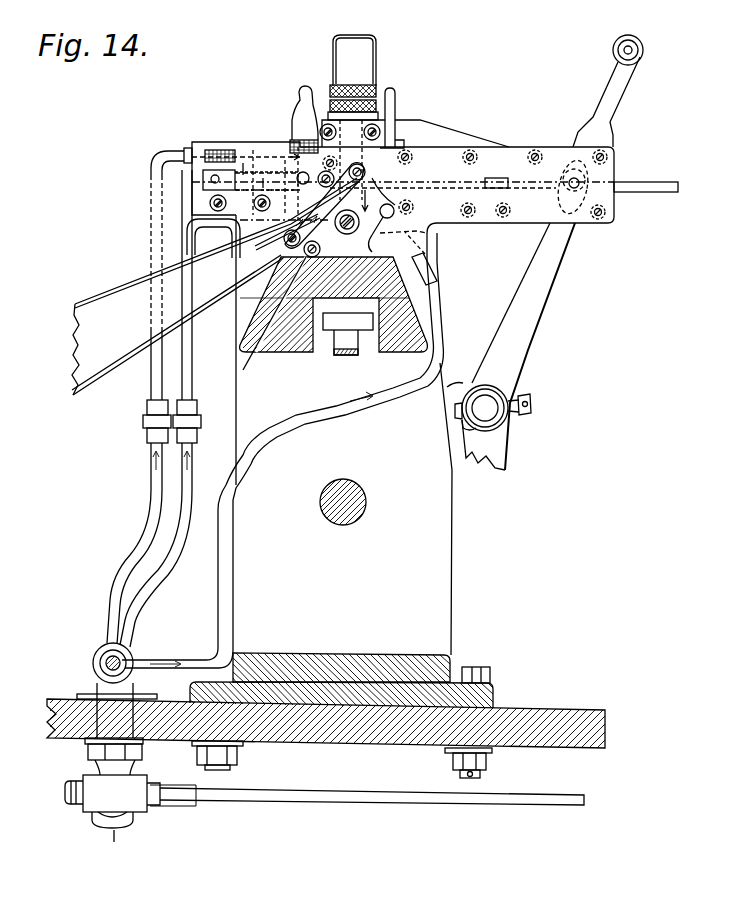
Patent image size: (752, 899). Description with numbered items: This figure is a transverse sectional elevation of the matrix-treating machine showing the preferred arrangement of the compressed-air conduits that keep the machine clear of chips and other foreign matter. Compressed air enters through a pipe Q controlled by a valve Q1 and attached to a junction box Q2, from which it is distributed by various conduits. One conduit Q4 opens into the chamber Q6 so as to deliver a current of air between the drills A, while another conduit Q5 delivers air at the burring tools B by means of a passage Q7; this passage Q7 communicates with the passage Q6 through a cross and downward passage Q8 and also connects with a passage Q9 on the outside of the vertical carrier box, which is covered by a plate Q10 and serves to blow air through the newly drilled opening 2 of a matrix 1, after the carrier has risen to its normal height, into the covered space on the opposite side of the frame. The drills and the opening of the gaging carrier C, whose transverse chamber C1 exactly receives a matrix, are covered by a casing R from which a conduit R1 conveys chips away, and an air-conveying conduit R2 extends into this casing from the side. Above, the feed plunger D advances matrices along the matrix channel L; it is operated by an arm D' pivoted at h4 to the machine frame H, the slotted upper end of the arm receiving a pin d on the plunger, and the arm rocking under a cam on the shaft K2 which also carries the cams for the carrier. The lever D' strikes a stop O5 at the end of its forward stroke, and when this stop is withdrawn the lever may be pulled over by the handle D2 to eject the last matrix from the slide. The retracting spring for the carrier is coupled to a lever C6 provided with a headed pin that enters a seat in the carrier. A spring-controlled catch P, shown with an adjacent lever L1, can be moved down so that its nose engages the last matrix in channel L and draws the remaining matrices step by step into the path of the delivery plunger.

The spring-controlled catch P is at (304, 100).
The cross and downward passage Q8 is at (311, 135).
The handle lever L1 is at (297, 122).
The passage Q7 is at (240, 152).
The matrix 1 is at (245, 165).
The opening 2 is at (264, 178).
The conduit Q5 is at (152, 246).
The burring tools B is at (203, 190).
The conduit R1 is at (92, 296).
The chamber Q6 is at (252, 250).
The conduit Q4 is at (193, 382).
The plate Q10 is at (274, 327).
The gaging carrier C is at (397, 107).
The stop O5 is at (358, 131).
The passage Q9 is at (372, 178).
The matrix channel L is at (473, 182).
The pin d is at (571, 178).
The handle D2 is at (644, 54).
The arm D' is at (563, 263).
The feed plunger D is at (646, 171).
The matrix receiving chamber C1 is at (417, 231).
The drills A is at (375, 230).
The casing R is at (378, 238).
The air conveying conduit R2 is at (432, 279).
The lever C6 is at (520, 400).
The pivot h4 is at (508, 426).
The shaft K2 is at (359, 485).
The frame H is at (326, 496).
The junction box Q2 is at (127, 652).
The valve Q1 is at (137, 780).
The pipe Q is at (122, 817).